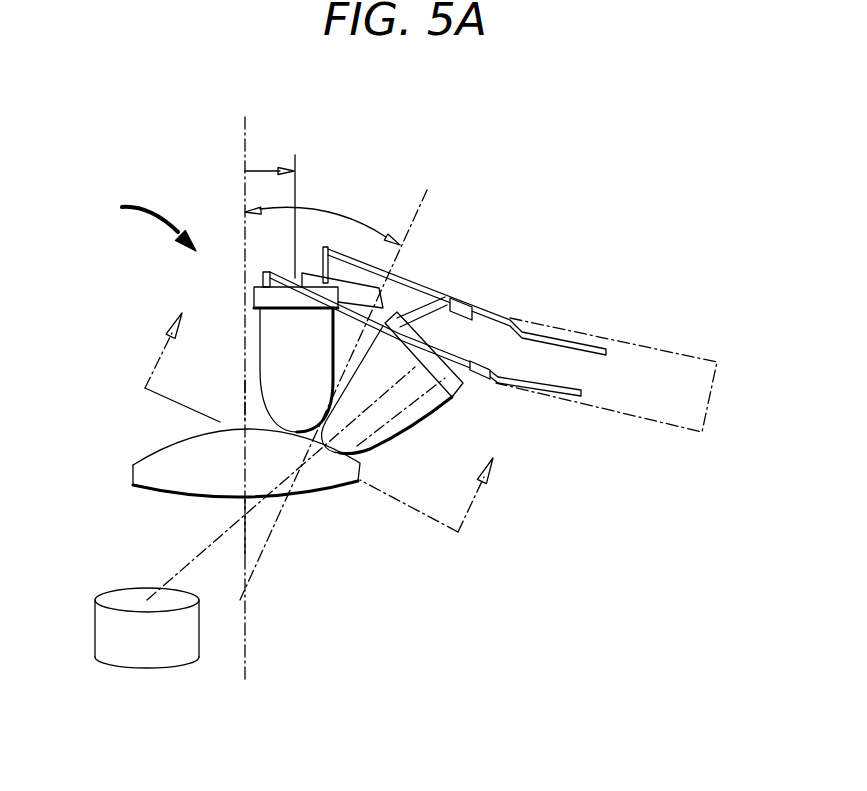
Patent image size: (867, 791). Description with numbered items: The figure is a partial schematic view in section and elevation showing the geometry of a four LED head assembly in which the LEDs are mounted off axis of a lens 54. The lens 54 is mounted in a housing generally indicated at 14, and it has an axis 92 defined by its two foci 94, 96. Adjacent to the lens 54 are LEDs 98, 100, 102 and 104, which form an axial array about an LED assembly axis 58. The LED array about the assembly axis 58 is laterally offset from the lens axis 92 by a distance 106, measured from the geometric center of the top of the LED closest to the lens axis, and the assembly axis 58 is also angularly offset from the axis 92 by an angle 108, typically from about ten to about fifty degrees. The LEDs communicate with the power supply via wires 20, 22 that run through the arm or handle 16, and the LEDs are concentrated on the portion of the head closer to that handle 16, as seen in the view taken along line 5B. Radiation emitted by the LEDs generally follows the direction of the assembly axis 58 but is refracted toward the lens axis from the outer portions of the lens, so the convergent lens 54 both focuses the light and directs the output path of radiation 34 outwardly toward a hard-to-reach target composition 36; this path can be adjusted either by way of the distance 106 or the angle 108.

The compact LED mounting head assembly 14 is at (139, 219).
The arm 16 is at (681, 354).
The wire 20 is at (573, 349).
The wire 22 is at (553, 393).
The output path of radiation 34 is at (177, 572).
The target composition 36 is at (104, 638).
The lens 54 is at (147, 468).
The LED assembly axis 58 is at (427, 206).
The lens axis 92 is at (243, 133).
The focus of lens 94 is at (248, 530).
The focus of lens 96 is at (245, 398).
The LED 98 is at (272, 364).
The LED 100 is at (410, 423).
The LED 102 is at (341, 278).
The LED 104 is at (426, 298).
The lateral offset distance 106 is at (262, 167).
The angular offset 108 is at (326, 214).
The section line 5B- 5B is at (332, 402).